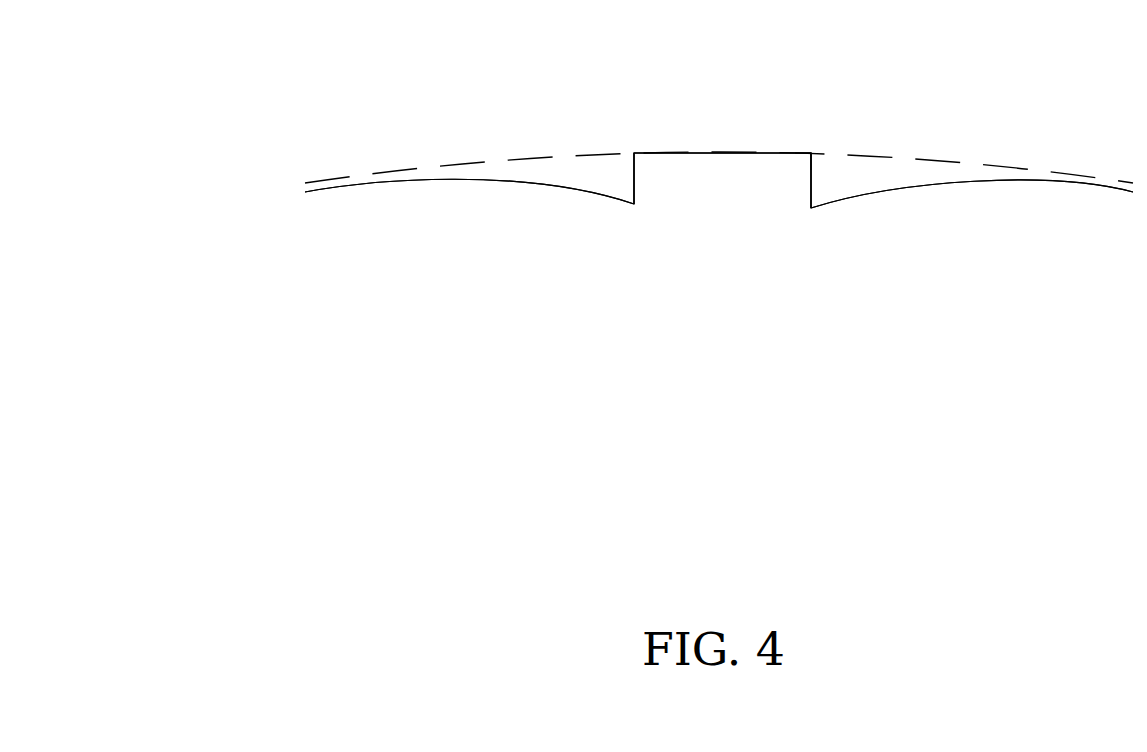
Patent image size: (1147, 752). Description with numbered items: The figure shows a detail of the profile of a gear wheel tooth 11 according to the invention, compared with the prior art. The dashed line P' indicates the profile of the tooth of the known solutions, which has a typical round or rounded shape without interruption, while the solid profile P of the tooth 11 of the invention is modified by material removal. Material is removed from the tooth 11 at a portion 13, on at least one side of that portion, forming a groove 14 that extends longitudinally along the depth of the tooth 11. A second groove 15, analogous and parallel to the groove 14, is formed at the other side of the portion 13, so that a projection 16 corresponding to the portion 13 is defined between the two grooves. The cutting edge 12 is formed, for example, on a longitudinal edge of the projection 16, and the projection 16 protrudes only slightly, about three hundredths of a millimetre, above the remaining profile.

The tooth 11 is at (288, 204).
The cutting edge 12 is at (824, 146).
The portion of the tooth 13 is at (703, 145).
The groove 14 is at (838, 197).
The second groove 15 is at (624, 199).
The projection 16 is at (769, 160).
The profile of the tooth P is at (719, 223).
The profile of the tooth of the known solutions P' is at (719, 106).